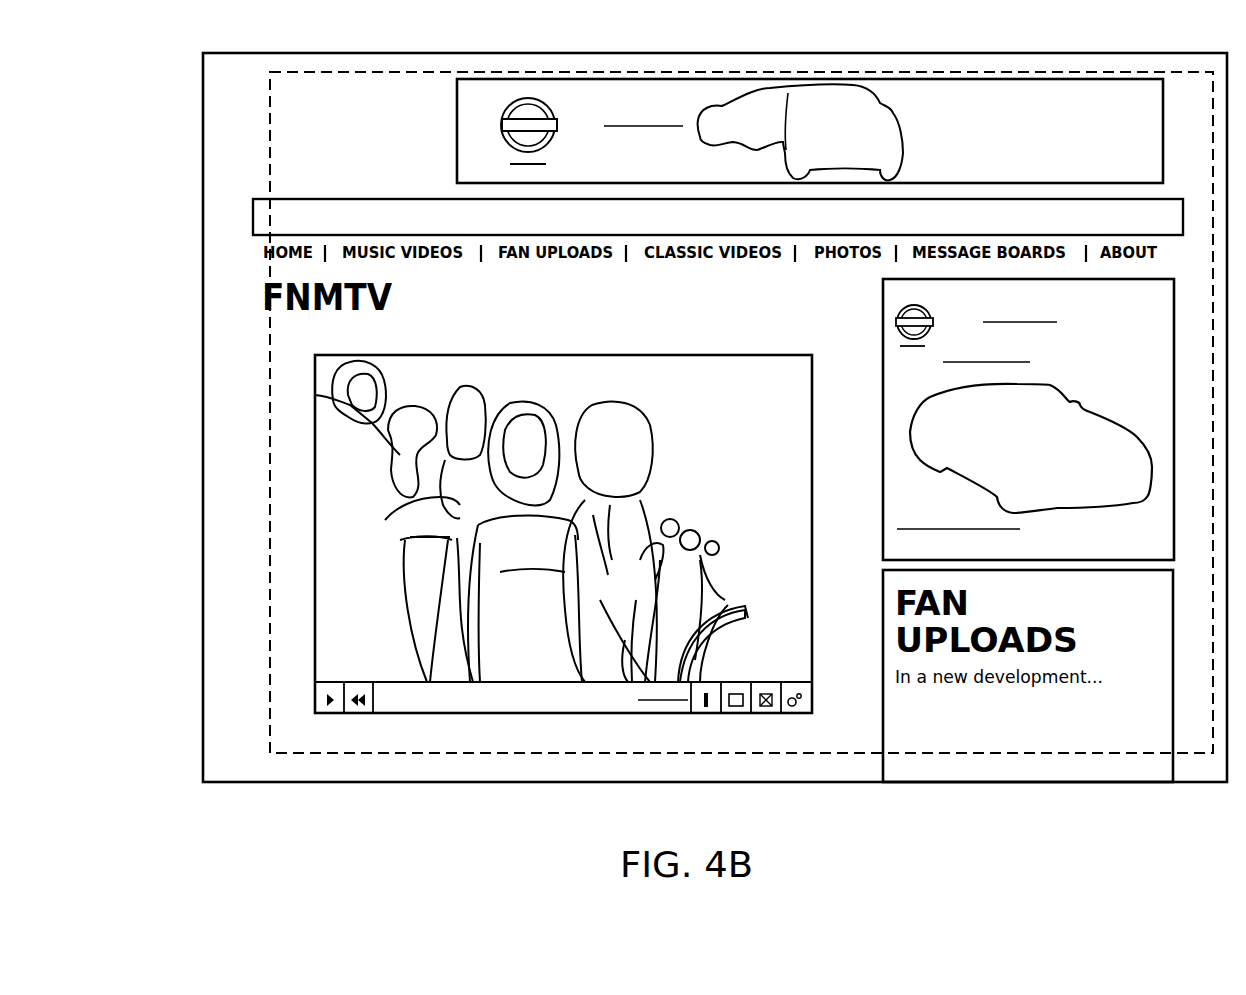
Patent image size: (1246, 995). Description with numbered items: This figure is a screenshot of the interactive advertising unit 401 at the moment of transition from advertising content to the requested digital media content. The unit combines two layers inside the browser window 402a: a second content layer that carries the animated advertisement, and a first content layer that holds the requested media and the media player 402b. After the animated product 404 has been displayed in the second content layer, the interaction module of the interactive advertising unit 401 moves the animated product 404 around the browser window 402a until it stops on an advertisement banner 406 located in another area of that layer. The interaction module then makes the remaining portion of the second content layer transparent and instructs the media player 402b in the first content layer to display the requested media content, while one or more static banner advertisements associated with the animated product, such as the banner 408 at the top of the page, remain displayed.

The interactive advertising unit 401 is at (270, 172).
The browser window 402a is at (203, 460).
The media player 402b is at (400, 584).
The animated product 404 is at (1048, 453).
The advertisement banner 406 is at (1028, 419).
The banner advertisement 408 is at (1143, 170).